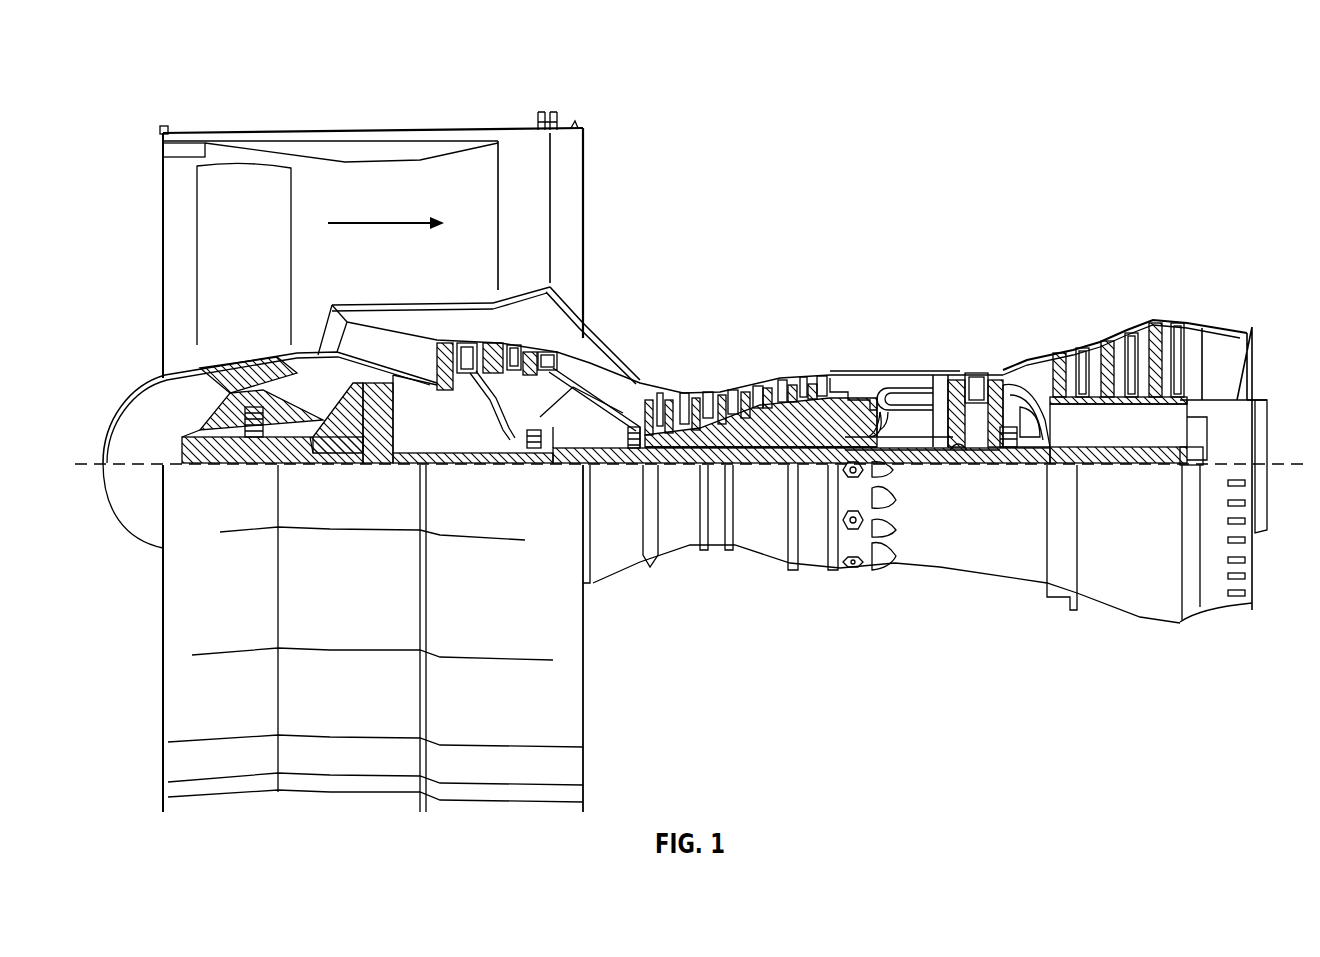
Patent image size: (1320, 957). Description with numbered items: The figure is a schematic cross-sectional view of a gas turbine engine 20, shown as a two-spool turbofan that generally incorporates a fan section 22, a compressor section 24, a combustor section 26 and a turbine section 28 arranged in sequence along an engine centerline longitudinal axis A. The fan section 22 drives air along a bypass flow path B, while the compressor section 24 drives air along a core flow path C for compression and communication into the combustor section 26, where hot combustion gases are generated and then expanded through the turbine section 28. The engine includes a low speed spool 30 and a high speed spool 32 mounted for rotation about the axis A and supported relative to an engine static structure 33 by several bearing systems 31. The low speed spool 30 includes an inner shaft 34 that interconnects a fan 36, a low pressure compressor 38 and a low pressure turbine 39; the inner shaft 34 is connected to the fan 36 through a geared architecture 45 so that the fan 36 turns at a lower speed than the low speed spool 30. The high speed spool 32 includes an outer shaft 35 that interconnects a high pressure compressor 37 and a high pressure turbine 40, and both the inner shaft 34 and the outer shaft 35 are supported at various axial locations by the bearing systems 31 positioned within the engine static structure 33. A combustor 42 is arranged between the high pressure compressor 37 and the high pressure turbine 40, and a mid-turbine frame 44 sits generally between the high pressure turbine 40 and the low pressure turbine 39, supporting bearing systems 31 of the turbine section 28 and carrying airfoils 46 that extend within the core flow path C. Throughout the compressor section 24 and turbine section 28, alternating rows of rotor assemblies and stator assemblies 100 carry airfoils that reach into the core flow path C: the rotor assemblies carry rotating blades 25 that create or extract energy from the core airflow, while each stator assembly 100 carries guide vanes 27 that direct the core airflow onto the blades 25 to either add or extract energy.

The gas turbine engine 20 is at (1042, 178).
The fan section 22 is at (254, 128).
The compressor section 24 is at (634, 366).
The rotating blades 25 is at (445, 348).
The combustor section 26 is at (902, 364).
The guide vanes 27 is at (465, 377).
The turbine section 28 is at (1076, 292).
The low speed spool 30 is at (767, 475).
The bearing systems 31 is at (270, 423).
The high speed spool 32 is at (803, 423).
The engine static structure 33 is at (809, 578).
The inner shaft 34 is at (610, 453).
The outer shaft 35 is at (967, 443).
The fan 36 is at (233, 254).
The high pressure compressor 37 is at (733, 430).
The low pressure compressor 38 is at (508, 357).
The low pressure turbine 39 is at (1120, 338).
The high pressure turbine 40 is at (962, 378).
The combustor 42 is at (897, 393).
The mid-turbine frame 44 is at (1040, 415).
The geared architecture 45 is at (380, 443).
The airfoils 46 is at (1017, 390).
The stator assemblies 100 is at (458, 396).
The engine centerline longitudinal axis A is at (1300, 462).
The bypass flow path B is at (386, 222).
The core flow path C is at (610, 390).